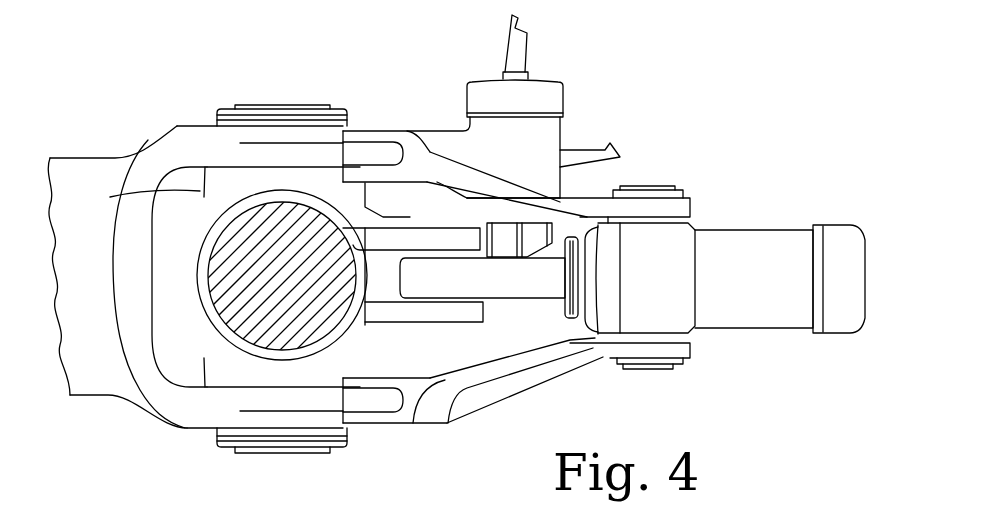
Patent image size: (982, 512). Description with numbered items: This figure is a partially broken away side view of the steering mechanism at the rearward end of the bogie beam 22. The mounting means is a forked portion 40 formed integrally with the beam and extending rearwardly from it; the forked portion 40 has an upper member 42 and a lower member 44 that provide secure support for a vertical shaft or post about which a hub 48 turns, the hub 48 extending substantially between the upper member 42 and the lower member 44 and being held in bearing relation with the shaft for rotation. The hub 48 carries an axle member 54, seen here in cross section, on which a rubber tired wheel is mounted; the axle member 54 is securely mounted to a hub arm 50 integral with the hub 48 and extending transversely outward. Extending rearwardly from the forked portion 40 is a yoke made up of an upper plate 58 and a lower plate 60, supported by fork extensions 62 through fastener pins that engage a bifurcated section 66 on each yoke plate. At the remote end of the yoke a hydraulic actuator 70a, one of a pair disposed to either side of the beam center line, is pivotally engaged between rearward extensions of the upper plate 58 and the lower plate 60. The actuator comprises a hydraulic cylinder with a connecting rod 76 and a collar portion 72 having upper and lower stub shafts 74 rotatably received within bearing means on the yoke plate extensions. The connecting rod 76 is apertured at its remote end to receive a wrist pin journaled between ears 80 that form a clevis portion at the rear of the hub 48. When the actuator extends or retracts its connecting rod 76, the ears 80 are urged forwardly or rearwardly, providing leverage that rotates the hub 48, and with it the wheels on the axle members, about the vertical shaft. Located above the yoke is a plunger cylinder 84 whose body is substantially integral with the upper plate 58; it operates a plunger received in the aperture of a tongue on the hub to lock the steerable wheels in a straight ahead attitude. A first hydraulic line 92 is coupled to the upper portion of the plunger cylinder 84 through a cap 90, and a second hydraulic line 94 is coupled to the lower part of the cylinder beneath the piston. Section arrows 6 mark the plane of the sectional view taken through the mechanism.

The section line 6- 6 is at (52, 130).
The bogie beam 22 is at (112, 393).
The forked portion 40 is at (175, 122).
The upper member 42 is at (258, 140).
The lower member 44 is at (217, 400).
The hub 48 is at (135, 202).
The hub arm 50 is at (197, 270).
The axle member 54 is at (230, 313).
The upper plate 58 is at (505, 183).
The lower plate 60 is at (540, 378).
The fork extension 62 is at (370, 150).
The bifurcated section 66 is at (392, 133).
The hydraulic actuator 70a is at (760, 310).
The collar portion 72 is at (688, 278).
The stub shaft 74 is at (648, 190).
The connecting rod 76 is at (537, 280).
The ear 80 is at (433, 242).
The plunger cylinder 84 is at (545, 135).
The cap 90 is at (478, 98).
The first hydraulic line 92 is at (527, 55).
The second hydraulic line 94 is at (590, 150).